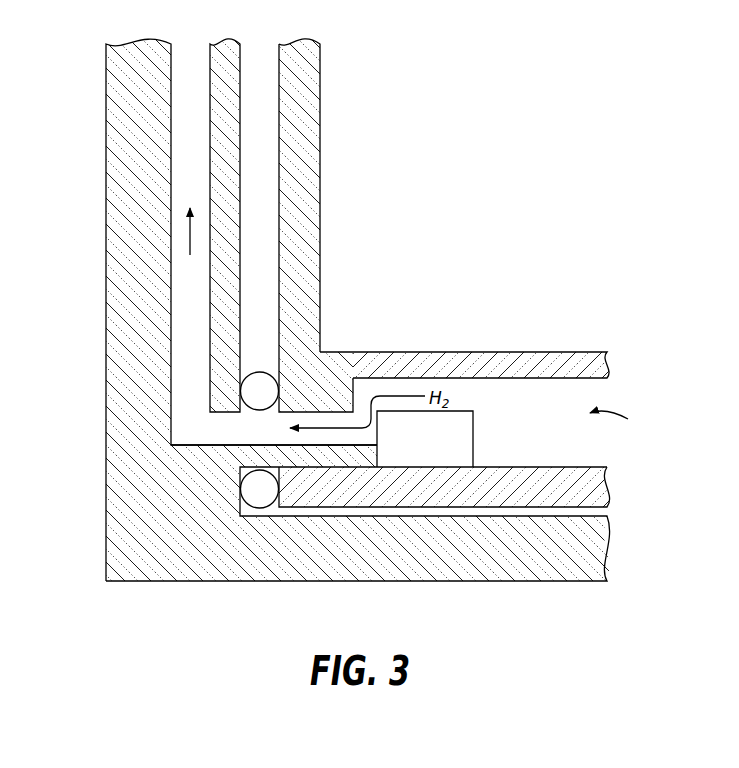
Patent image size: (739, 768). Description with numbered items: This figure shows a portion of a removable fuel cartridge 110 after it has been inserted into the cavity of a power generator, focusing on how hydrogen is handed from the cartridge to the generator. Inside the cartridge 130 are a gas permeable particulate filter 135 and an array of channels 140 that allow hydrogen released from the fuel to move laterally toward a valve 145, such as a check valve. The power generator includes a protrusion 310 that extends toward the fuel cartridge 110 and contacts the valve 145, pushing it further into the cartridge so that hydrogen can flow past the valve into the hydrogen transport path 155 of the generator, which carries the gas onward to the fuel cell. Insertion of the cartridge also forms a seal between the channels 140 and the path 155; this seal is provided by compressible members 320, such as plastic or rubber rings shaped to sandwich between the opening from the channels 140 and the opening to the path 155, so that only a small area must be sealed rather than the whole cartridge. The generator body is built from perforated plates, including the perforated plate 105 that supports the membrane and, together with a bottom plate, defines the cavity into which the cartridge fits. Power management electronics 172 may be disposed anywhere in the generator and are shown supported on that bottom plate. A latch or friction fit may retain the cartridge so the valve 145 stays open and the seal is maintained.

The perforated plate 105 is at (230, 72).
The removable fuel cartridge 110 is at (321, 214).
The cartridge 130 is at (545, 467).
The gas permeable particulate filter 135 is at (465, 352).
The channels 140 is at (625, 420).
The valve 145 is at (473, 437).
The hydrogen transport channel 155 is at (186, 309).
The power management electronics 172 is at (545, 568).
The protrusion 310 is at (334, 450).
The compressible members 320 is at (258, 490).